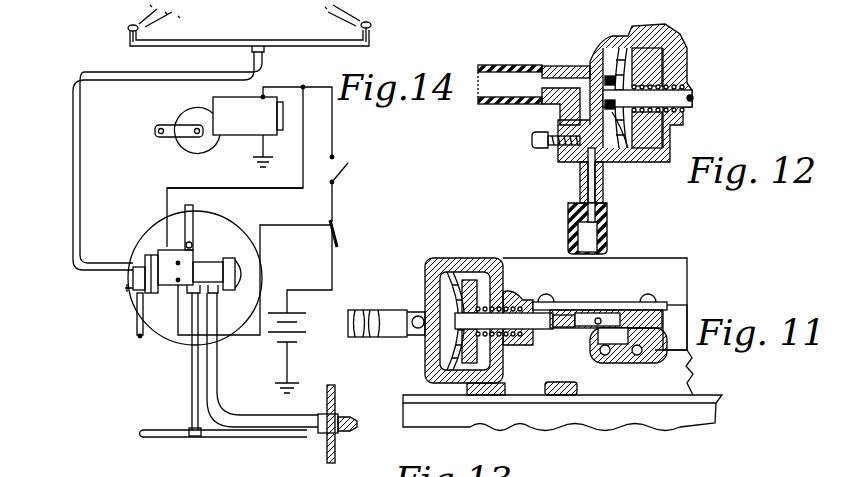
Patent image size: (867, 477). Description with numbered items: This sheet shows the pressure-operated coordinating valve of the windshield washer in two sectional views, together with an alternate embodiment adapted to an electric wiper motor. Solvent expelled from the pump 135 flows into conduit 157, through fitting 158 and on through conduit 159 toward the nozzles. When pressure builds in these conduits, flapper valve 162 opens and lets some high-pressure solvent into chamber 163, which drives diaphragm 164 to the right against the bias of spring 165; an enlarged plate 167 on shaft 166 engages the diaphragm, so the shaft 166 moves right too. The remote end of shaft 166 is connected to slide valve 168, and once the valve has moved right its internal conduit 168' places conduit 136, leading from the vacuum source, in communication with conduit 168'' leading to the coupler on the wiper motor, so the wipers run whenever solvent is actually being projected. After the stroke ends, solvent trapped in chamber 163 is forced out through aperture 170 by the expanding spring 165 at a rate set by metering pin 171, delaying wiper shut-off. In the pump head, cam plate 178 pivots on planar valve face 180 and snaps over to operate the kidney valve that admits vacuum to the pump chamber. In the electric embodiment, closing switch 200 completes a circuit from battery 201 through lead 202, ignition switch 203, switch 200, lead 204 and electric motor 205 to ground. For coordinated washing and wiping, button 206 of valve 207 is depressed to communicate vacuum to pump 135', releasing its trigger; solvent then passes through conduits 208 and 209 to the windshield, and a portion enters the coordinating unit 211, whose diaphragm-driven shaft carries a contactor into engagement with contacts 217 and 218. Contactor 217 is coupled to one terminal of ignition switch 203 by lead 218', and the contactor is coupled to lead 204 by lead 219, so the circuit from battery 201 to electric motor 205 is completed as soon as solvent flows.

In FIG. 11, the pump 135 is at (587, 414).
In FIG. 14, the pump 135' is at (181, 301).
In FIG. 11, the conduit 136 is at (637, 362).
In FIG. 12, the conduit 157 is at (610, 228).
In FIG. 12, the fitting 158 is at (580, 168).
In FIG. 12, the conduit 159 is at (498, 65).
In FIG. 11, the conduit 159 is at (382, 310).
In FIG. 12, the flapper valve 162 is at (633, 143).
In FIG. 12, the chamber 163 is at (612, 58).
In FIG. 12, the diaphragm 164 is at (652, 62).
In FIG. 11, the diaphragm 164 is at (467, 278).
In FIG. 12, the spring 165 is at (672, 136).
In FIG. 11, the spring 165 is at (477, 335).
In FIG. 12, the shaft 166 is at (688, 96).
In FIG. 11, the shaft 166 is at (524, 318).
In FIG. 12, the enlarged plate 167 is at (622, 50).
In FIG. 11, the enlarged plate 167 is at (449, 272).
In FIG. 11, the slide valve 168 is at (600, 295).
In FIG. 11, the conduit 168' is at (601, 295).
In FIG. 11, the conduit 168'' is at (586, 362).
In FIG. 12, the aperture 170 is at (605, 163).
In FIG. 12, the metering pin 171 is at (536, 142).
In FIG. 13, the cam plate 178 is at (594, 476).
In FIG. 14, the planar valve face 180 is at (224, 383).
In FIG. 14, the switch 200 is at (340, 171).
In FIG. 14, the battery 201 is at (298, 345).
In FIG. 14, the lead 202 is at (287, 290).
In FIG. 14, the ignition switch 203 is at (337, 235).
In FIG. 14, the lead 204 is at (272, 87).
In FIG. 14, the electric motor 205 is at (222, 106).
In FIG. 14, the button 206 is at (354, 427).
In FIG. 14, the valve 207 is at (208, 437).
In FIG. 14, the conduit 208 is at (137, 320).
In FIG. 14, the conduit 209 is at (72, 175).
In FIG. 14, the coordinating unit 211 is at (155, 245).
In FIG. 14, the contact 217 is at (180, 282).
In FIG. 14, the contact 218 is at (207, 235).
In FIG. 14, the lead 218' is at (255, 266).
In FIG. 14, the lead 219 is at (196, 188).